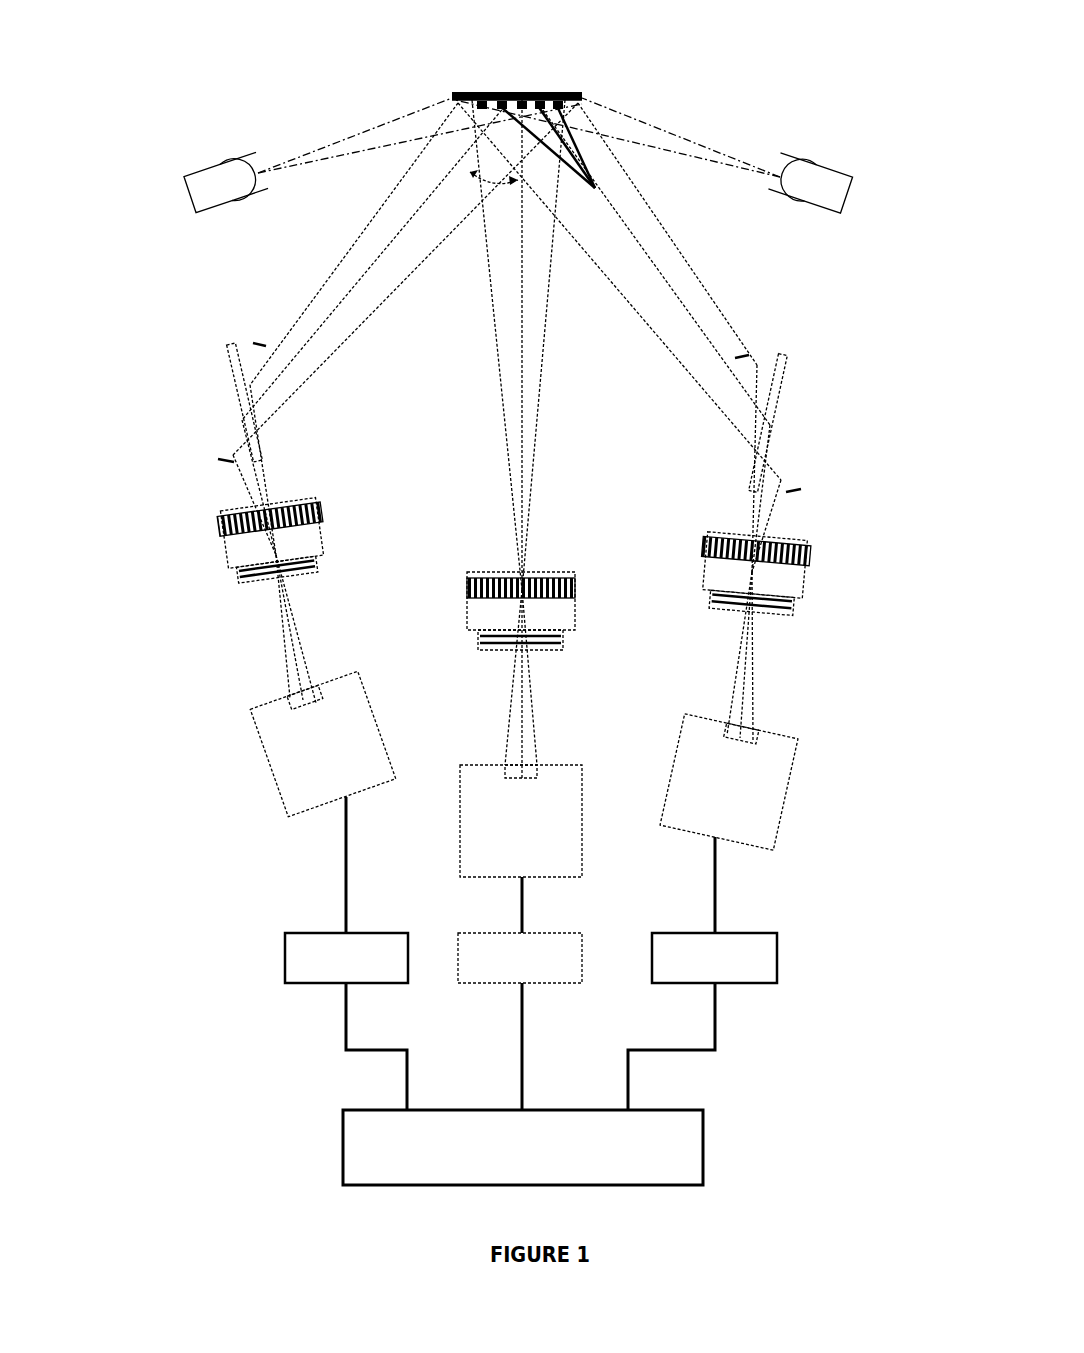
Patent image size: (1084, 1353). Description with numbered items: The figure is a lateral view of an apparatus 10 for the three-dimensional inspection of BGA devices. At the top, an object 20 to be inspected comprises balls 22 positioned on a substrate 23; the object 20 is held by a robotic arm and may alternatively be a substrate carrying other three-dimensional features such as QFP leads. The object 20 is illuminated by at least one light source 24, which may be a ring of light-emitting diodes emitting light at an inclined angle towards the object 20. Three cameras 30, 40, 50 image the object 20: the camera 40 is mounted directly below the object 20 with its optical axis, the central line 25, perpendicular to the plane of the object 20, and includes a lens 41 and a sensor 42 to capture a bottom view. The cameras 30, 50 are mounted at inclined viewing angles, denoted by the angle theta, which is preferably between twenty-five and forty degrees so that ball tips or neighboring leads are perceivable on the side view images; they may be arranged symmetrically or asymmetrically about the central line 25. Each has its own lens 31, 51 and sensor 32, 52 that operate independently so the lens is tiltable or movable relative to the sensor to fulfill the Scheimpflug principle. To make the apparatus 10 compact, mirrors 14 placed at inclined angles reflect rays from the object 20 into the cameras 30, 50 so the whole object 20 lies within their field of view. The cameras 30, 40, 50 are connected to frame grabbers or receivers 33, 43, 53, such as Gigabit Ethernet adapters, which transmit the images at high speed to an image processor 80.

The apparatus 10 is at (176, 248).
The mirrors 14 is at (238, 410).
The object 20 is at (362, 55).
The balls 22 is at (554, 174).
The substrate 23 is at (480, 93).
The light source 24 is at (223, 165).
The central line 25 is at (520, 330).
The camera 30 is at (203, 505).
The lens 31 is at (214, 539).
The sensor 32 is at (305, 730).
The receiver 33 is at (290, 933).
The camera 40 is at (467, 555).
The lens 41 is at (547, 583).
The sensor 42 is at (565, 790).
The receiver 43 is at (550, 933).
The camera 50 is at (797, 523).
The lens 51 is at (726, 529).
The sensor 52 is at (732, 763).
The receiver 53 is at (740, 933).
The image processor 80 is at (655, 1112).